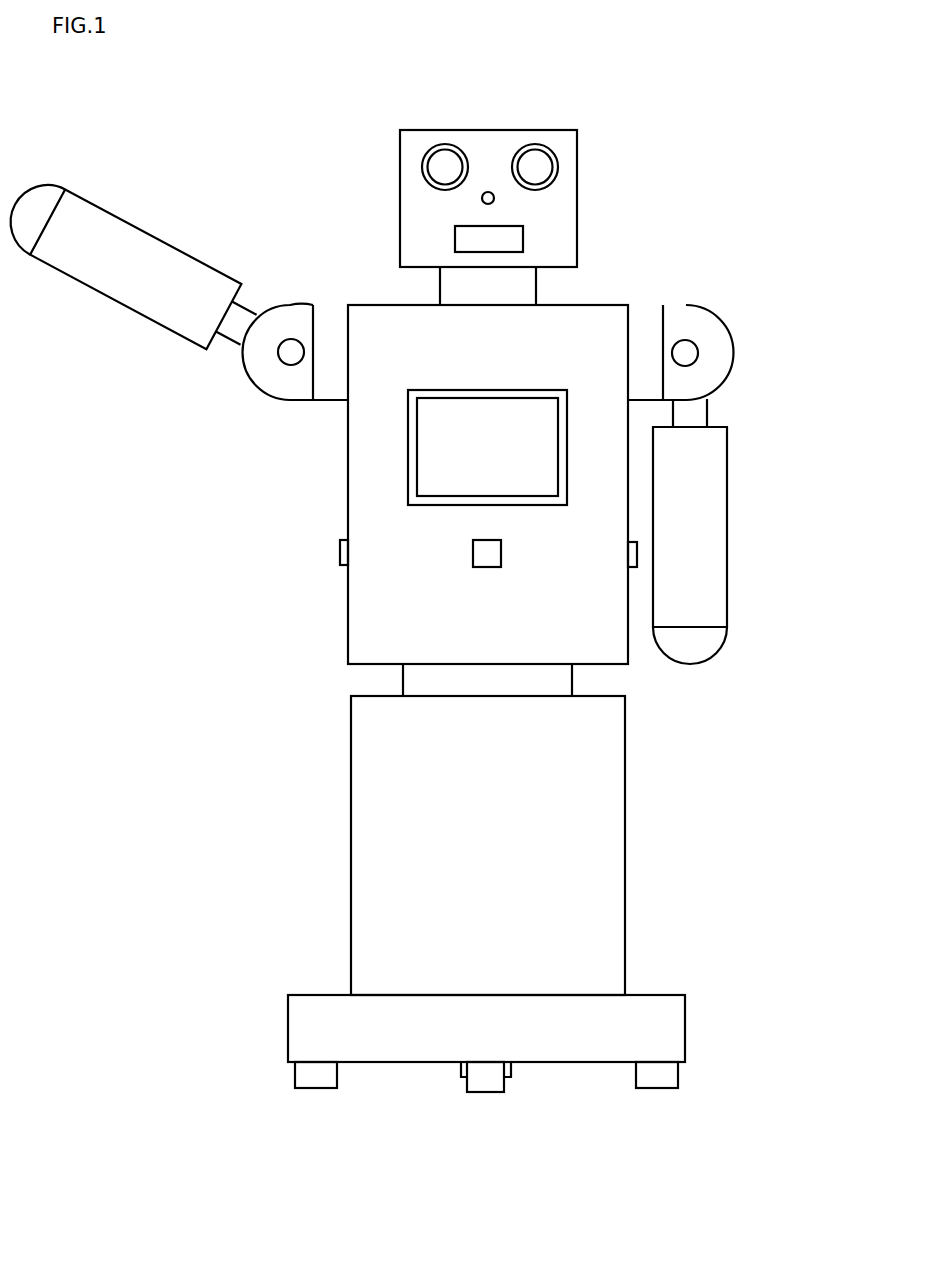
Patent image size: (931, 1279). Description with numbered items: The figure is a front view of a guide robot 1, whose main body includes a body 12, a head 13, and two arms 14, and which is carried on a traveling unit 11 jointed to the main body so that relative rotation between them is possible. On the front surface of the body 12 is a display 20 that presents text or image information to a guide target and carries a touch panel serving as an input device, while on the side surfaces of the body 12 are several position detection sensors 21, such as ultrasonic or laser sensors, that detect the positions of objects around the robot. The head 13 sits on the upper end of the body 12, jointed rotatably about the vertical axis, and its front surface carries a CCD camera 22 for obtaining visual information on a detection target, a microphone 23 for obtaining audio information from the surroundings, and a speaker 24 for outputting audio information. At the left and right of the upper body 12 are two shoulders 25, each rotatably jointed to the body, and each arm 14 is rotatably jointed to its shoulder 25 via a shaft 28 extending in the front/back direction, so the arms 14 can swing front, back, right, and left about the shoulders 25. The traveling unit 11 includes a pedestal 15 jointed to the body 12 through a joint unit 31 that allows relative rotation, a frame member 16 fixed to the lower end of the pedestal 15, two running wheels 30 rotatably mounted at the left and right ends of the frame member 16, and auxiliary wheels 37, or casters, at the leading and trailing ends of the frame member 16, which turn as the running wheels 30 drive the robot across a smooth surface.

The guide robot 1 is at (643, 98).
The traveling unit 11 is at (676, 972).
The body 12 is at (615, 656).
The head 13 is at (555, 212).
The arm 14 is at (125, 283).
The pedestal 15 is at (612, 852).
The frame member 16 is at (672, 1032).
The display 20 is at (415, 460).
The position detection sensor 21 is at (340, 553).
The CCD camera 22 is at (445, 152).
The microphone 23 is at (481, 200).
The speaker 24 is at (455, 243).
The shoulder 25 is at (287, 318).
The shaft 28 is at (282, 367).
The running wheel 30 is at (315, 1080).
The joint unit 31 is at (383, 683).
The auxiliary wheel 37 is at (487, 1082).